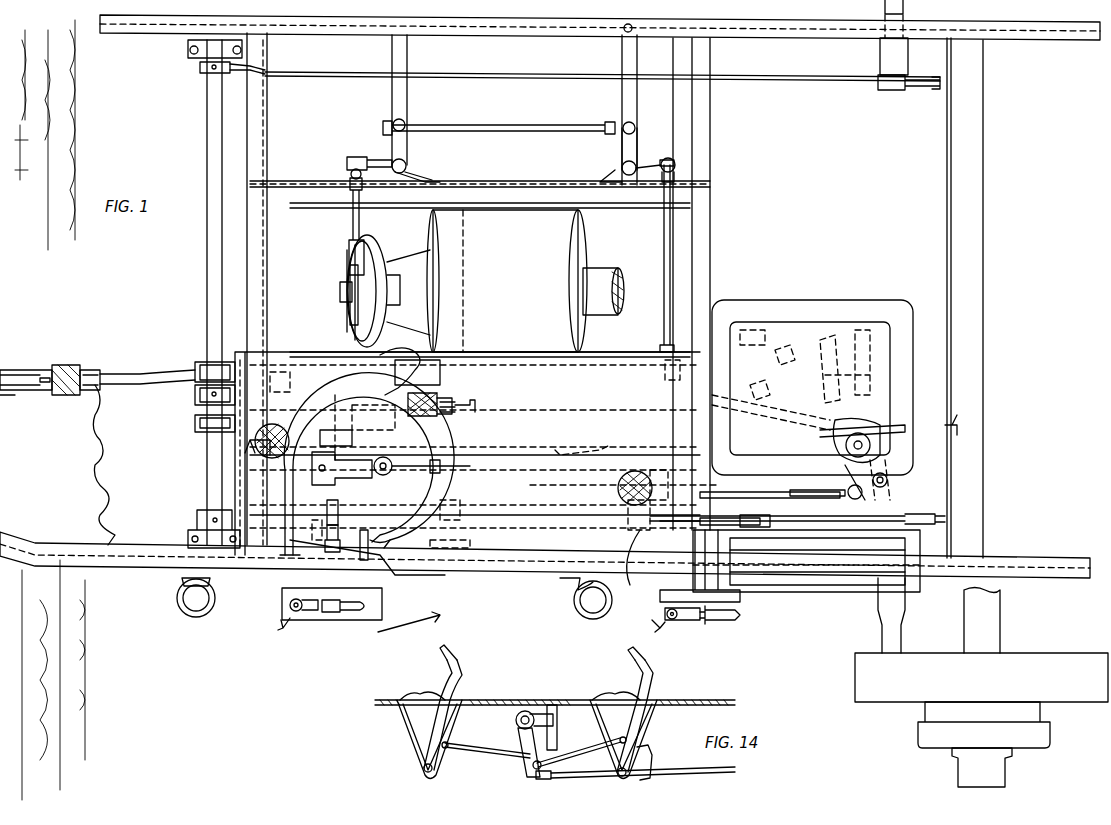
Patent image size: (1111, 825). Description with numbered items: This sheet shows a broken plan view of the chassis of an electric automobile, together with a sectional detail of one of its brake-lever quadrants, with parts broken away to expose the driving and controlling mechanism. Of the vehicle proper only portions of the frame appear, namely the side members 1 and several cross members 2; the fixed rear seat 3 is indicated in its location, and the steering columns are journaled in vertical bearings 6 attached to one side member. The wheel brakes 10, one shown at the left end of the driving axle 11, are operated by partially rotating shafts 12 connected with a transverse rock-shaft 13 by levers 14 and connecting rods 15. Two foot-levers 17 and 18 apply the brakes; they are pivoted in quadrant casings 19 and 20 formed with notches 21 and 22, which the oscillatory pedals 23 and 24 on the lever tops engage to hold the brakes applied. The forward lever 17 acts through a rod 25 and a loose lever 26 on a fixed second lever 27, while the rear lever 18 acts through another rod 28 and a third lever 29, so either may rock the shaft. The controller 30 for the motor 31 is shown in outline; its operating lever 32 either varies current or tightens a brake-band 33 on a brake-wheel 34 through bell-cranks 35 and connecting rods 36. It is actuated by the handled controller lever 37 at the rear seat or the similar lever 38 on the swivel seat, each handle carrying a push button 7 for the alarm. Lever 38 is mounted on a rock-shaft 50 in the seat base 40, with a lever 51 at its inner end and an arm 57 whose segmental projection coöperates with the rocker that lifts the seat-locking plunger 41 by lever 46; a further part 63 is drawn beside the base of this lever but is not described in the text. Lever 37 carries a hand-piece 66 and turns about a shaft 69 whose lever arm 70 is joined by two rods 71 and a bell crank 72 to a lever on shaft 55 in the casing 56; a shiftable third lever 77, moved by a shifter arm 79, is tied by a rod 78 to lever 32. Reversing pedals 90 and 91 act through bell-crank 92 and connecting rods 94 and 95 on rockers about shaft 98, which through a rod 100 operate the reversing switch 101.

In FIG. 1, the side members 1 is at (150, 32).
In FIG. 1, the cross members 2 is at (267, 132).
In FIG. 1, the rear seat 3 is at (480, 495).
In FIG. 1, the vertical bearings 6 is at (196, 617).
In FIG. 1, the push buttons 7 is at (660, 622).
In FIG. 1, the wheel brakes 10 is at (1050, 653).
In FIG. 1, the driving axle 11 is at (998, 622).
In FIG. 1, the shafts 12 is at (905, 15).
In FIG. 1, the transverse rock-shaft 13 is at (207, 120).
In FIG. 14, the transverse rock-shaft 13 is at (516, 718).
In FIG. 1, the levers 14 is at (232, 68).
In FIG. 14, the levers 14 is at (536, 776).
In FIG. 1, the connecting rods 15 is at (505, 72).
In FIG. 14, the connecting rods 15 is at (678, 770).
In FIG. 1, the foot-lever 17 is at (48, 392).
In FIG. 14, the foot-lever 17 is at (440, 719).
In FIG. 14, the foot-lever 18 is at (632, 720).
In FIG. 1, the quadrant casing 19 is at (14, 395).
In FIG. 14, the quadrant casing 19 is at (408, 733).
In FIG. 1, the quadrant casing 20 is at (445, 393).
In FIG. 14, the quadrant casing 20 is at (652, 724).
In FIG. 1, the notch 21 is at (15, 370).
In FIG. 14, the notch 21 is at (410, 697).
In FIG. 14, the notch 22 is at (604, 697).
In FIG. 1, the oscillatory plate or pedal 23 is at (70, 365).
In FIG. 14, the oscillatory plate or pedal 23 is at (450, 656).
In FIG. 1, the oscillatory plate or pedal 24 is at (428, 380).
In FIG. 14, the oscillatory plate or pedal 24 is at (641, 660).
In FIG. 1, the rod 25 is at (125, 374).
In FIG. 14, the rod 25 is at (487, 752).
In FIG. 1, the lever 26 is at (200, 365).
In FIG. 1, the second lever 27 is at (195, 395).
In FIG. 14, the second lever 27 is at (518, 735).
In FIG. 1, the rod 28 is at (278, 400).
In FIG. 14, the rod 28 is at (570, 760).
In FIG. 1, the third lever 29 is at (195, 418).
In FIG. 14, the third lever 29 is at (531, 766).
In FIG. 1, the controller 30 is at (810, 295).
In FIG. 1, the motor 31 is at (580, 250).
In FIG. 1, the operating lever 32 is at (862, 502).
In FIG. 1, the brake-band 33 is at (352, 262).
In FIG. 1, the brake-wheel 34 is at (348, 283).
In FIG. 1, the bell-cranks 35 is at (375, 157).
In FIG. 1, the connecting rods 36 is at (530, 124).
In FIG. 1, the handled controller lever 37 is at (700, 622).
In FIG. 1, the controller lever 38 is at (318, 620).
In FIG. 1, the seat base 40 is at (410, 545).
In FIG. 1, the plunger 41 is at (395, 462).
In FIG. 1, the lever 46 is at (400, 372).
In FIG. 1, the rock-shaft 50 is at (330, 535).
In FIG. 1, the lever 51 is at (340, 475).
In FIG. 1, the shaft 55 is at (385, 548).
In FIG. 1, the casing 56 is at (465, 535).
In FIG. 1, the arm 57 is at (320, 440).
In FIG. 1, the latch 63 is at (352, 612).
In FIG. 1, the hand-piece 66 is at (730, 620).
In FIG. 1, the shaft 69 is at (720, 595).
In FIG. 1, the lever arm 70 is at (730, 525).
In FIG. 1, the rods 71 is at (762, 527).
In FIG. 1, the bell crank 72 is at (633, 585).
In FIG. 1, the third lever 77 is at (325, 550).
In FIG. 1, the rod 78 is at (812, 496).
In FIG. 1, the shifter arm 79 is at (364, 560).
In FIG. 1, the pedal 90 is at (628, 474).
In FIG. 1, the pedal 91 is at (258, 448).
In FIG. 1, the bell-crank 92 is at (656, 470).
In FIG. 1, the connecting rod 94 is at (520, 475).
In FIG. 1, the connecting rod 95 is at (340, 430).
In FIG. 1, the shaft 98 is at (450, 520).
In FIG. 1, the rod 100 is at (570, 450).
In FIG. 1, the reversing switch 101 is at (760, 498).